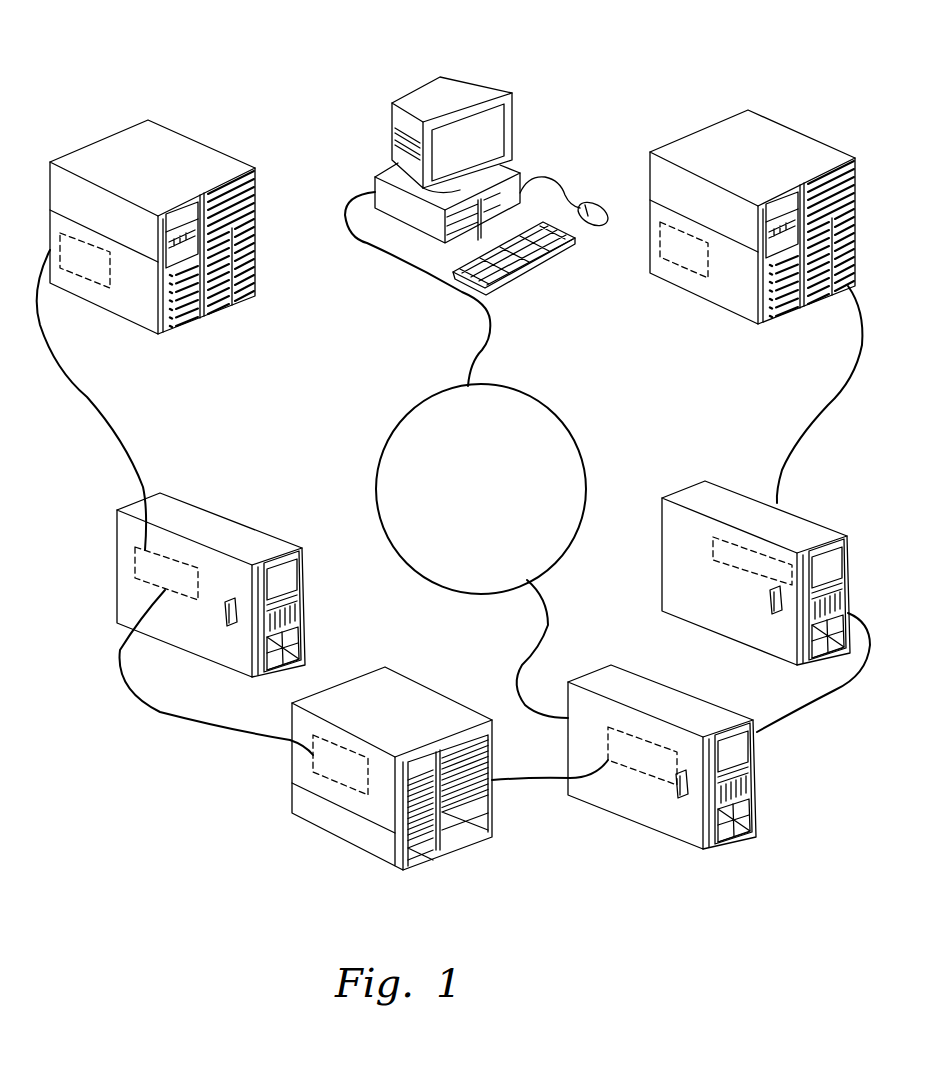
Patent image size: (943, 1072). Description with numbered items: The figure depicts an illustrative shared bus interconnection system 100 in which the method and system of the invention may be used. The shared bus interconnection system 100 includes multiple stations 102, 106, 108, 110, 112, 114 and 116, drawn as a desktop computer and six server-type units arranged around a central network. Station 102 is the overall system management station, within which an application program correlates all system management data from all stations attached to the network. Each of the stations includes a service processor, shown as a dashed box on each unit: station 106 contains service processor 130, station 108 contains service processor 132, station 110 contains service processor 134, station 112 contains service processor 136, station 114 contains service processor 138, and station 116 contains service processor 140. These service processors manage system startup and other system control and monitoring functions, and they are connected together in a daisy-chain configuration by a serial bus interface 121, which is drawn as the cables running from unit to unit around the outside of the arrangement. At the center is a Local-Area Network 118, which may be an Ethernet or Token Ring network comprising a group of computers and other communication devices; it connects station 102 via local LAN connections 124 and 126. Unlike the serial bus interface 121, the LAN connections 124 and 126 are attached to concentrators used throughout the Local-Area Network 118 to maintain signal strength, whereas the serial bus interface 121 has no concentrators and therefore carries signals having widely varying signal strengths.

The shared bus interconnection system 100 is at (501, 45).
The station 102 is at (512, 112).
The station 106 is at (152, 215).
The station 108 is at (179, 571).
The station 110 is at (392, 748).
The station 112 is at (662, 733).
The station 114 is at (756, 553).
The station 116 is at (736, 204).
The Local-Area Network (LAN) 118 is at (570, 428).
The serial bus interface 121 is at (120, 430).
The local LAN connection 124 is at (490, 337).
The local LAN connection 126 is at (525, 650).
The service processor 130 is at (80, 273).
The service processor 132 is at (135, 560).
The service processor 134 is at (338, 747).
The service processor 136 is at (657, 743).
The service processor 138 is at (740, 573).
The service processor 140 is at (680, 267).